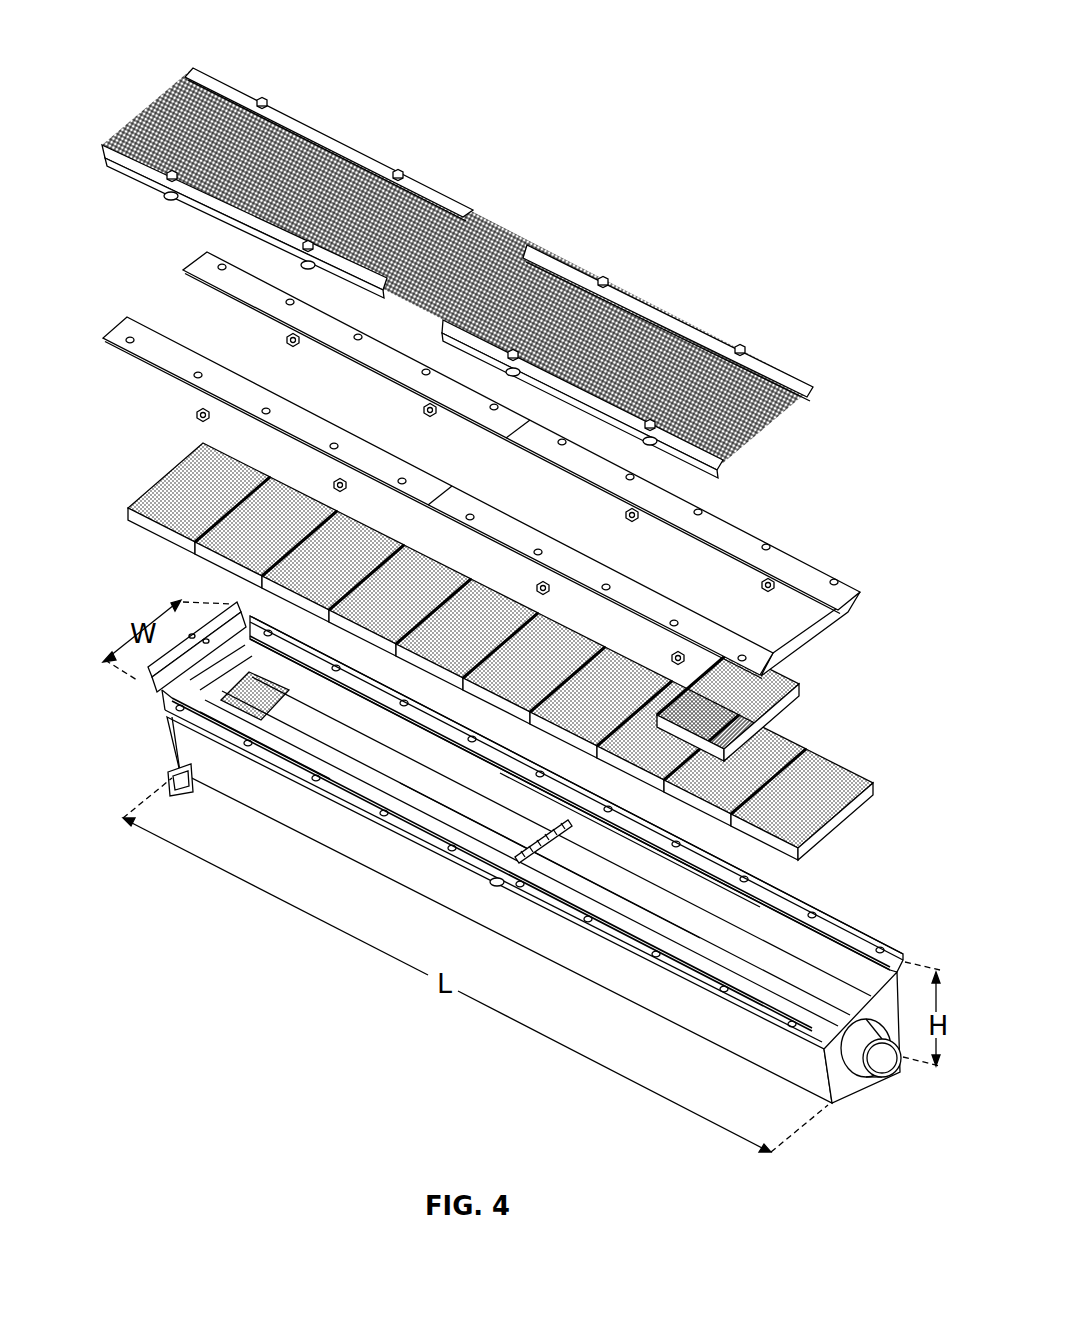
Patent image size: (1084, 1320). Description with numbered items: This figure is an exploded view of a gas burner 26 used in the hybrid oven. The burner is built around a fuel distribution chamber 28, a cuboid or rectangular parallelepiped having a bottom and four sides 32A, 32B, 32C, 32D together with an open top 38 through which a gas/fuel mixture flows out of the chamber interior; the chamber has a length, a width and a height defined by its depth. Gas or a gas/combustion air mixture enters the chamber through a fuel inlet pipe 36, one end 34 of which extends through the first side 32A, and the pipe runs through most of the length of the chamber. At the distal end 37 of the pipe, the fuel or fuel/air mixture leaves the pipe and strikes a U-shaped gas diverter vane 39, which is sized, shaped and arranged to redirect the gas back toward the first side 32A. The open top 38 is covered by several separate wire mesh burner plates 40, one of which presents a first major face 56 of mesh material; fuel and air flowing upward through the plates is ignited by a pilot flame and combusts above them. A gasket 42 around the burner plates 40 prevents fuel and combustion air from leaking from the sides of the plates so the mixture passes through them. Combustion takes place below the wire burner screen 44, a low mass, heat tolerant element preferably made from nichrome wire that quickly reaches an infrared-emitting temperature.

The filter assembly 26 is at (750, 66).
The fuel distribution chamber 28 is at (504, 878).
The first side 32A is at (886, 998).
The side 32B is at (160, 733).
The side 32C is at (186, 747).
The side 32D is at (864, 918).
The end of fuel inlet pipe 34 is at (876, 1080).
The fuel inlet pipe 36 is at (672, 935).
The distal end 37 is at (327, 753).
The open top 38 is at (722, 915).
The U-shaped gas diverter vane 39 is at (227, 707).
The wire mesh burner plates 40 is at (493, 641).
The gasket 42 is at (186, 260).
The wire burner screen 44 is at (180, 102).
The first major face 56 is at (147, 498).